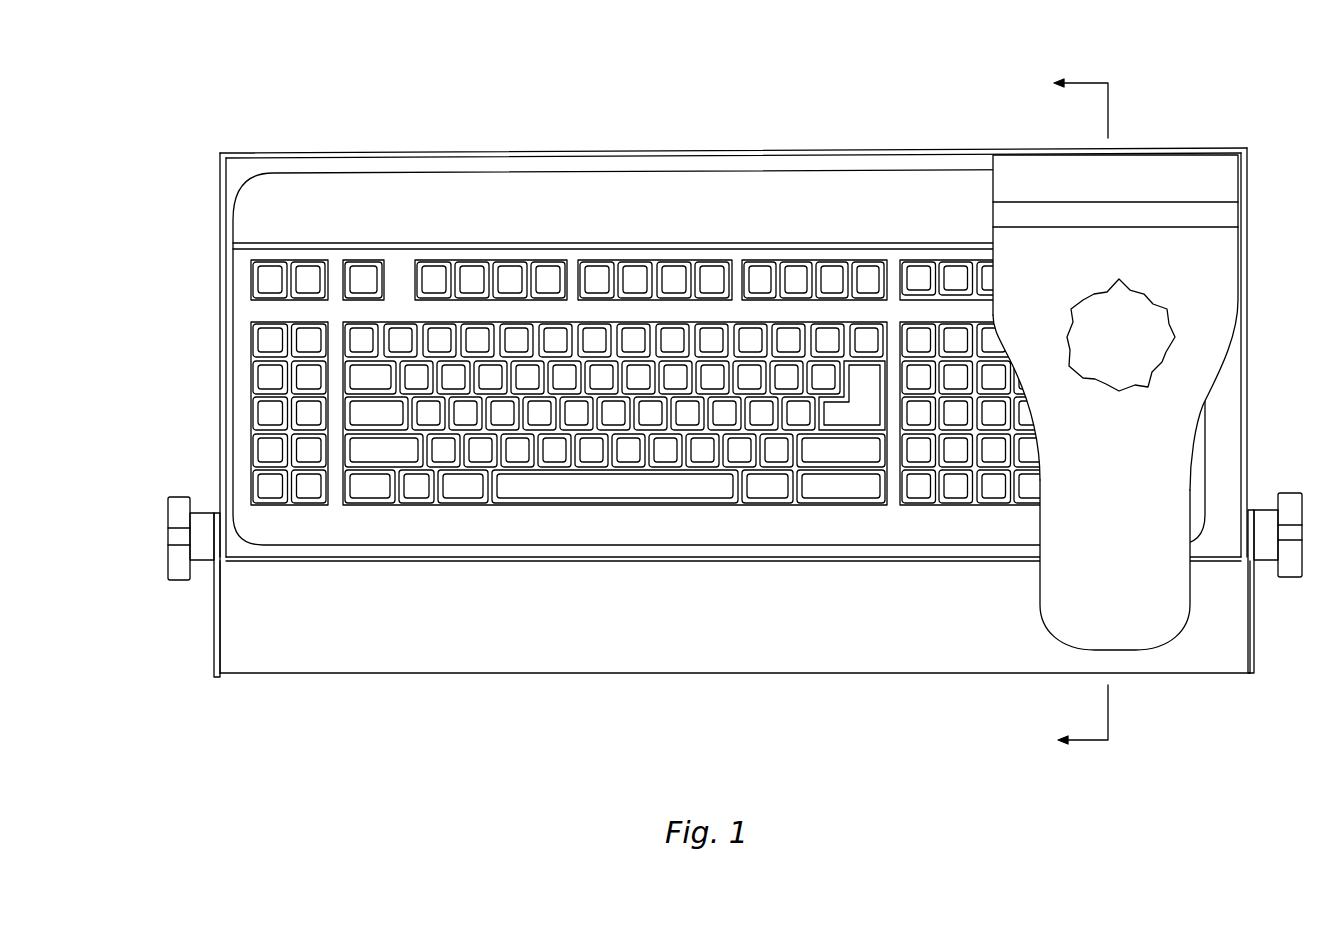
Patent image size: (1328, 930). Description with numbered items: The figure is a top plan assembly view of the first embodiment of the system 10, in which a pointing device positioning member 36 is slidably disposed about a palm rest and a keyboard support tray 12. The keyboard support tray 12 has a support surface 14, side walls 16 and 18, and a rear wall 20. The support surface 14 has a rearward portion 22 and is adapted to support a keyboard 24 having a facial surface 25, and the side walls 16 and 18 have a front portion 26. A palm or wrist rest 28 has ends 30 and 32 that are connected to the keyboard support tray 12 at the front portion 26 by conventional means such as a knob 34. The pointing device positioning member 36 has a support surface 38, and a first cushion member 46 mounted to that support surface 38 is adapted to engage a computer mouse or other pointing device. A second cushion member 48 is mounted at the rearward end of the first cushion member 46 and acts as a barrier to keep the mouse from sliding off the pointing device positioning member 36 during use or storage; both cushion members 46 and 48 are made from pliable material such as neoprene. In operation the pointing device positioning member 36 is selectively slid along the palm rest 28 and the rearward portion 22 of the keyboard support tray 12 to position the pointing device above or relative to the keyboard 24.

The system 10 is at (729, 419).
The keyboard support tray 12 is at (290, 143).
The support surface 14 is at (1224, 437).
The side wall 16 is at (218, 347).
The side wall 18 is at (1247, 300).
The rear wall 20 is at (667, 310).
The rearward portion 22 is at (228, 187).
The keyboard 24 is at (418, 215).
The facial surface 25 is at (793, 272).
The front portion 26 is at (224, 548).
The palm or wrist rest 28 is at (600, 639).
The end 30 is at (212, 678).
The end 32 is at (1254, 666).
The knob 34 is at (168, 566).
The pointing device positioning member 36 is at (1158, 398).
The support surface 38 is at (1150, 192).
The first cushion member 46 is at (1129, 524).
The second cushion member 48 is at (1195, 212).